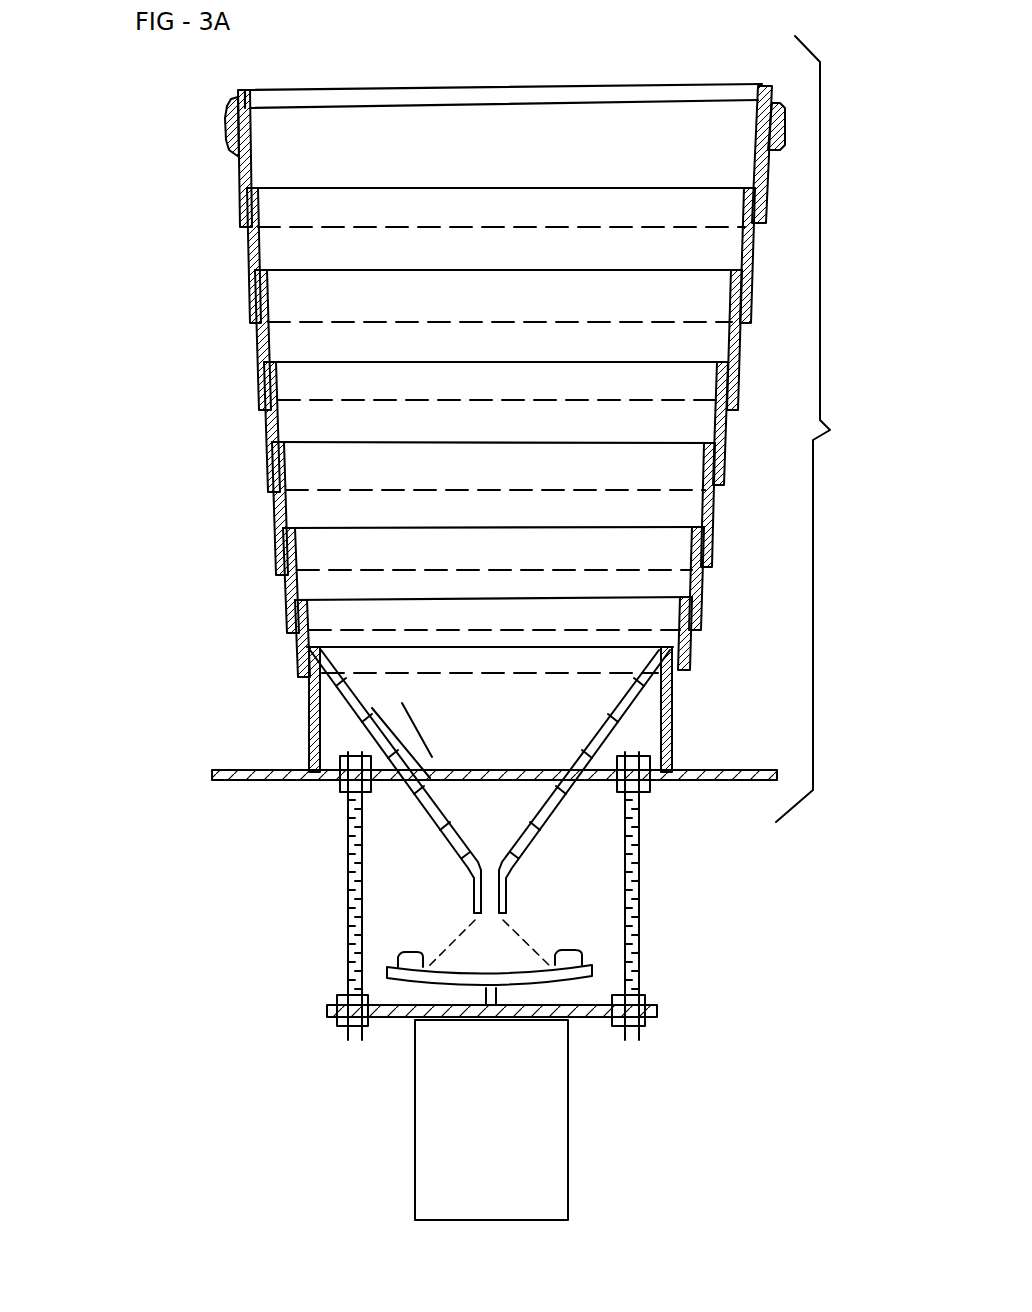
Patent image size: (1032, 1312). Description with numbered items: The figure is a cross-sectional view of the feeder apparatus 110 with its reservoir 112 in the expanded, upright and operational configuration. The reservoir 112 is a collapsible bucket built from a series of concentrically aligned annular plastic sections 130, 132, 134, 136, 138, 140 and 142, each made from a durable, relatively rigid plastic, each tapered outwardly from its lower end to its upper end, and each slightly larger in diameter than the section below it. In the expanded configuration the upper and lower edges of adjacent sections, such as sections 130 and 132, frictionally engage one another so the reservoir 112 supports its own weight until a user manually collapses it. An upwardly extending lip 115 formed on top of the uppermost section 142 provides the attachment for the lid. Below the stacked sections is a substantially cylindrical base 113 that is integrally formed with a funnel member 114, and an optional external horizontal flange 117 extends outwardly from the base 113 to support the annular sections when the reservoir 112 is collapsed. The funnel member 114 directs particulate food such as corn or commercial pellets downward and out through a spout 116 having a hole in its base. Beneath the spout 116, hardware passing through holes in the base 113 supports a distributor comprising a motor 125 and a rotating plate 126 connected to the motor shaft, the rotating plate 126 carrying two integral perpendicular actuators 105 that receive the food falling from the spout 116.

The actuators 105 is at (410, 952).
The feeder apparatus 110 is at (175, 826).
The reservoir 112 is at (843, 429).
The base 113 is at (310, 730).
The funnel member 114 is at (520, 761).
The lip 115 is at (246, 88).
The spout 116 is at (508, 895).
The external horizontal flange 117 is at (732, 767).
The motor 125 is at (517, 1146).
The rotating plate 126 is at (575, 986).
The annular section 130 is at (300, 653).
The annular section 132 is at (284, 602).
The annular section 134 is at (274, 530).
The annular section 136 is at (265, 446).
The annular section 138 is at (255, 363).
The annular section 140 is at (247, 270).
The uppermost section 142 is at (238, 164).